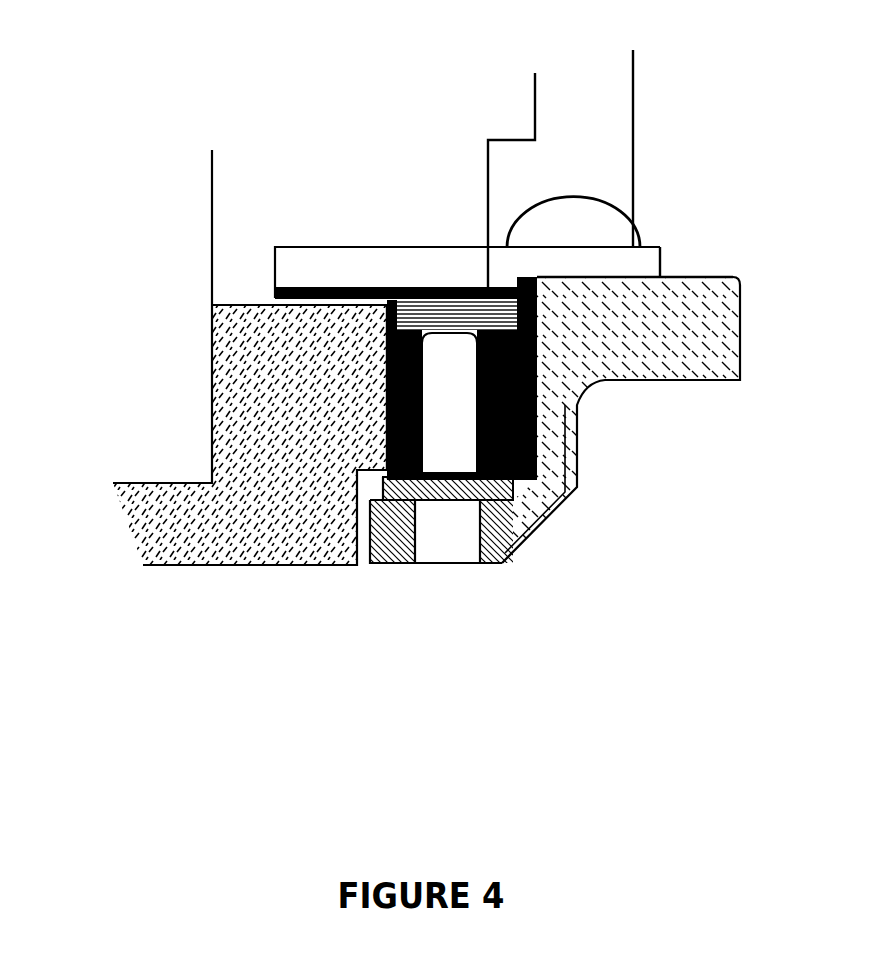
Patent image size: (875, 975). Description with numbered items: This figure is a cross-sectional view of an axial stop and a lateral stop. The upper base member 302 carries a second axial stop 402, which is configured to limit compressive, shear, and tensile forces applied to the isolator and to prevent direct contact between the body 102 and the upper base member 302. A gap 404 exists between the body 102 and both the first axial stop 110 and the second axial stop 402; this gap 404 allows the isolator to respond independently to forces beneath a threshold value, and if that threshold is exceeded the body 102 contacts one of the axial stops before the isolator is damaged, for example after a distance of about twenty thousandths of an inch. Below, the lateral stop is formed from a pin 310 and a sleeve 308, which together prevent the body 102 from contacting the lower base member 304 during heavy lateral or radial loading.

The body 102 is at (243, 398).
The first axial stop 110 is at (442, 487).
The upper base member 302 is at (643, 265).
The lower base member 304 is at (700, 362).
The sleeve 308 is at (503, 424).
The pin 310 is at (460, 457).
The second axial stop 402 is at (330, 292).
The gap 404 is at (355, 322).